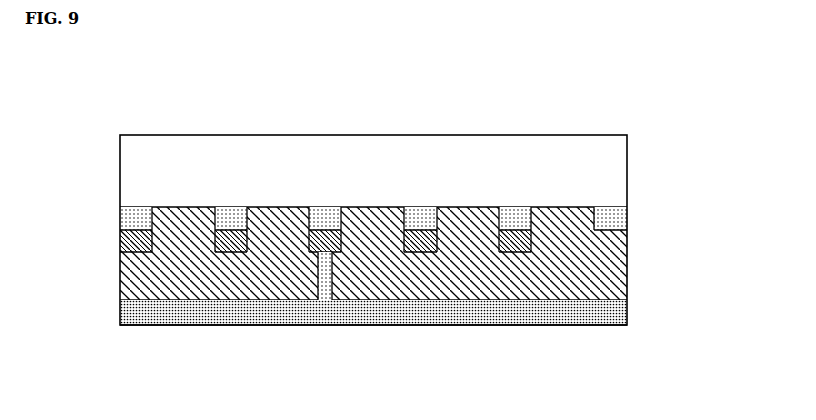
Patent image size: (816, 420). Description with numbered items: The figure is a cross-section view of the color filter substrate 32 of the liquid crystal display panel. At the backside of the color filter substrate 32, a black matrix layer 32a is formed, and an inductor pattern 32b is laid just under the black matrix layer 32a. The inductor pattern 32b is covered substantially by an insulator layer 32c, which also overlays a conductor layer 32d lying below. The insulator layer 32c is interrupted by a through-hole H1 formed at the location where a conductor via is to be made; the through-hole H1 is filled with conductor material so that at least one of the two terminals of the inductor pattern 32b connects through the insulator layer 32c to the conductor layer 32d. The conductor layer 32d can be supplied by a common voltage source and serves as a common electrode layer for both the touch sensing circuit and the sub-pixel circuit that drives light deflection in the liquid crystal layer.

The color filter substrate 32 is at (612, 160).
The black matrix layer 32a is at (132, 217).
The inductor pattern 32b is at (327, 238).
The insulator layer 32c is at (616, 284).
The conductor layer 32d is at (134, 313).
The through-hole H1 is at (325, 280).